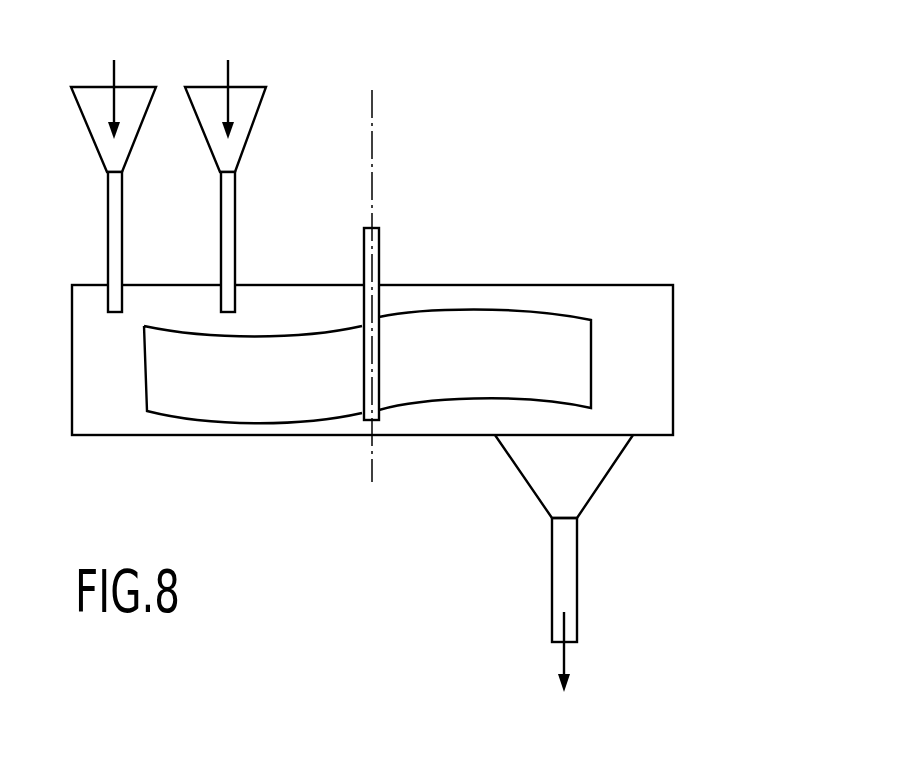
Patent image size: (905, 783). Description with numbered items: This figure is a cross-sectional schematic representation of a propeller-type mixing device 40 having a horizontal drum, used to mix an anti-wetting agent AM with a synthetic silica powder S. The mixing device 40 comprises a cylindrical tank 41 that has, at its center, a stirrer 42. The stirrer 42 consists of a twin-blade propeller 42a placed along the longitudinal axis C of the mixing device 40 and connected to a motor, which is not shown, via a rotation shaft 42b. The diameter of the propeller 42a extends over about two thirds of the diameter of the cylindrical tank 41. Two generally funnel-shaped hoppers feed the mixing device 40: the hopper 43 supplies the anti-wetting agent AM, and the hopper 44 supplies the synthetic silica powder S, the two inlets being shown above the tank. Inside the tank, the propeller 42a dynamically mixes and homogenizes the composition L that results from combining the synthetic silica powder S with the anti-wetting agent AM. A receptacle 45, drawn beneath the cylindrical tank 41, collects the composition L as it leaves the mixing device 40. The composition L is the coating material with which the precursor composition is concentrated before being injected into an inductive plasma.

The mixing device 40 is at (677, 362).
The cylindrical tank 41 is at (645, 302).
The stirrer 42 is at (428, 303).
The twin-blade propeller 42a is at (543, 340).
The rotation shaft 42b is at (380, 255).
The hopper 43 is at (90, 120).
The hopper 44 is at (243, 143).
The receptacle 45 is at (595, 469).
The anti-wetting agent AM is at (111, 75).
The synthetic silica powder S is at (225, 75).
The longitudinal axis C is at (374, 108).
The composition L is at (565, 656).